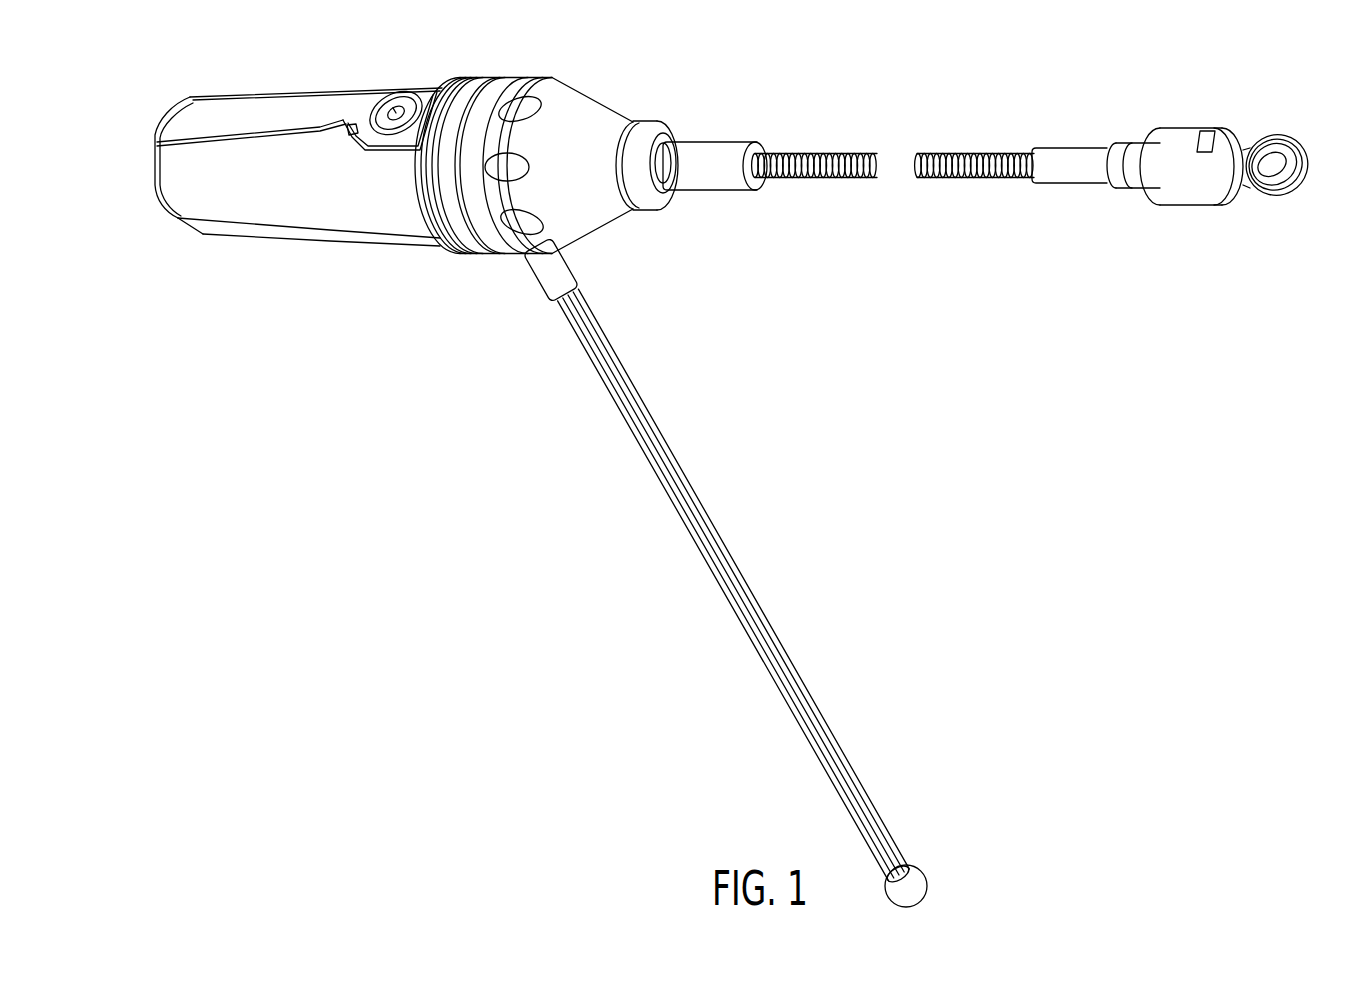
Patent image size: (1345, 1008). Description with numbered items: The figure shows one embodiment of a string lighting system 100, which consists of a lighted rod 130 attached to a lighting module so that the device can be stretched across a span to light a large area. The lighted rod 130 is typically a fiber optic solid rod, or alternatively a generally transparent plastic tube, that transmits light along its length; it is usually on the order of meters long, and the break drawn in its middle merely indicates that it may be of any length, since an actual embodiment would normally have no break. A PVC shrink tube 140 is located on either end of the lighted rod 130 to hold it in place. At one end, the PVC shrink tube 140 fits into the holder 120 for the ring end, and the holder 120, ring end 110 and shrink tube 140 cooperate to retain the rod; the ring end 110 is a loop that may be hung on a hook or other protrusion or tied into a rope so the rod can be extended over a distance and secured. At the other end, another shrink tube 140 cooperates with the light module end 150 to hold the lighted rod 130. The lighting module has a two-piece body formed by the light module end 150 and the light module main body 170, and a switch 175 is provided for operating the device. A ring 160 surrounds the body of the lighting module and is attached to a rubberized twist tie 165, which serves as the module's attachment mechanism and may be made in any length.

The string lighting system 100 is at (856, 84).
The ring end 110 is at (1290, 132).
The holder for ring end 120 is at (1165, 128).
The lighted rod 130 is at (947, 152).
The PVC shrink tube 140 is at (722, 140).
The light module end 150 is at (610, 97).
The ring 160 is at (483, 82).
The rubberized twist tie 165 is at (570, 327).
The light module main body 170 is at (272, 96).
The switch 175 is at (383, 100).